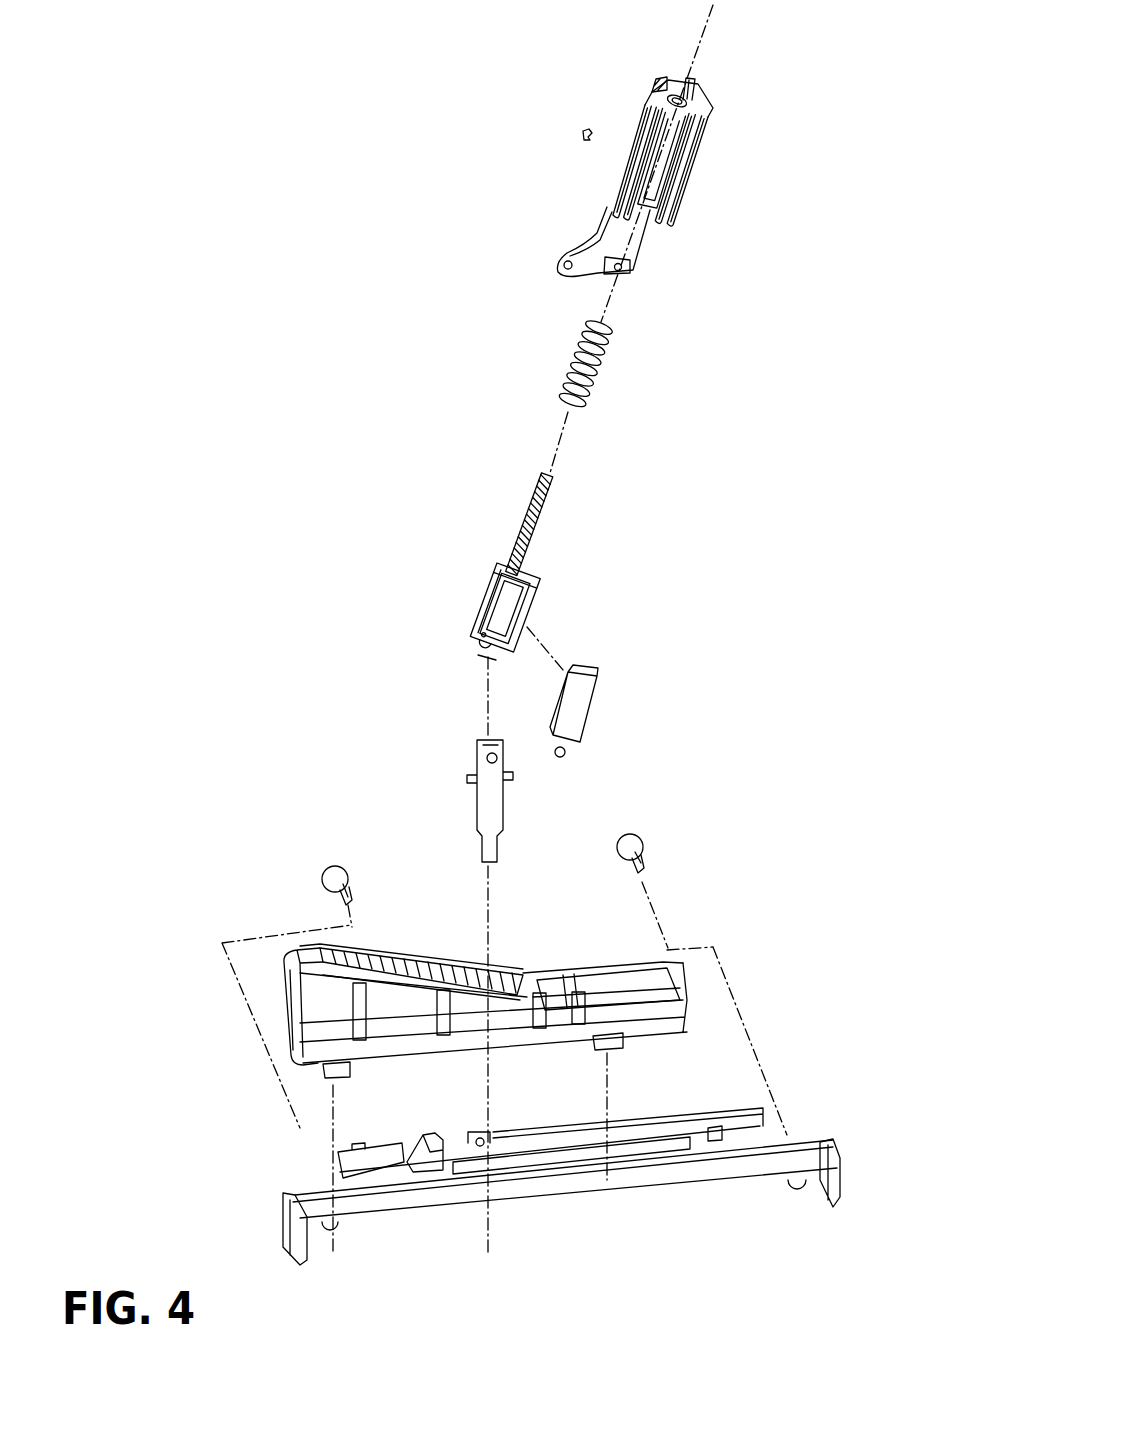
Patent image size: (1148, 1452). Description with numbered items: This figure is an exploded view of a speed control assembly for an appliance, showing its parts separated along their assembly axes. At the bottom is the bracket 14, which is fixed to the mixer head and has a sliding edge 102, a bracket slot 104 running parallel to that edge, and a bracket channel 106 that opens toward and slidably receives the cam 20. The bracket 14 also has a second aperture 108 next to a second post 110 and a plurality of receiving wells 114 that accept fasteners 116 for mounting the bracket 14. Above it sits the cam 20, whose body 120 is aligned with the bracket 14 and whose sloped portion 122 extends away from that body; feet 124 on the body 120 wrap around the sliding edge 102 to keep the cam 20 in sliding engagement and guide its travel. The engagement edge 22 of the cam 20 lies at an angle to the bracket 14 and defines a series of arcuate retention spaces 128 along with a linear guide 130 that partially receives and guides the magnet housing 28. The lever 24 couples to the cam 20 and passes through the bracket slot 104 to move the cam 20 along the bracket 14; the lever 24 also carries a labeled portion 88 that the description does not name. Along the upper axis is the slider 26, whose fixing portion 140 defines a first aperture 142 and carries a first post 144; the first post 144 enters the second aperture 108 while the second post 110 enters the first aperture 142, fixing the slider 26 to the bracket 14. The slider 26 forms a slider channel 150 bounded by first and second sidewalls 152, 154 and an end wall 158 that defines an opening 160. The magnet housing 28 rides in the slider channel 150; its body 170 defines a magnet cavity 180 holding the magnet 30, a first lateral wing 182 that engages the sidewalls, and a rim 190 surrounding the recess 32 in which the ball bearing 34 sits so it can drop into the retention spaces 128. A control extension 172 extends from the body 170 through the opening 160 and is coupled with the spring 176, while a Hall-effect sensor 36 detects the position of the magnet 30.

The bracket 14 is at (611, 1207).
The cam 20 is at (492, 1001).
The engagement edge 22 is at (413, 972).
The lever 24 is at (433, 792).
The slider 26 is at (730, 113).
The magnet housing 28 is at (513, 563).
The magnet 30 is at (578, 705).
The recess 32 is at (480, 660).
The ball bearing 34 is at (567, 754).
The Hall-effect sensor 36 is at (580, 129).
The connector body 88 is at (462, 770).
The sliding edge 102 is at (566, 1179).
The bracket slot 104 is at (571, 1155).
The bracket channel 106 is at (563, 1174).
The second aperture 108 is at (479, 1139).
The second post 110 is at (425, 1152).
The receiving wells 114 is at (561, 1202).
The fasteners 116 is at (325, 884).
The body 120 is at (603, 986).
The sloped portion 122 is at (493, 1013).
The feet 124 is at (473, 1055).
The retention spaces 128 is at (421, 987).
The linear guide 130 is at (411, 956).
The fixing portion 140 is at (603, 242).
The first aperture 142 is at (568, 265).
The first post 144 is at (617, 265).
The slider channel 150 is at (662, 160).
The first sidewall 152 is at (638, 162).
The second sidewall 154 is at (681, 169).
The end wall 158 is at (689, 89).
The opening 160 is at (659, 84).
The body 170 is at (505, 607).
The control extension 172 is at (529, 524).
The spring 176 is at (602, 380).
The magnet cavity 180 is at (505, 608).
The first lateral wing 182 is at (502, 612).
The rim 190 is at (484, 645).